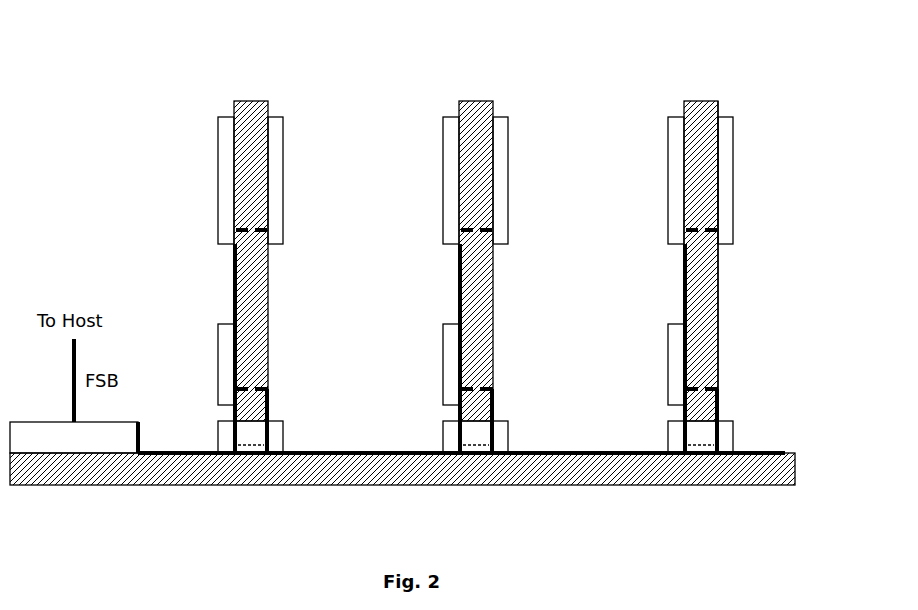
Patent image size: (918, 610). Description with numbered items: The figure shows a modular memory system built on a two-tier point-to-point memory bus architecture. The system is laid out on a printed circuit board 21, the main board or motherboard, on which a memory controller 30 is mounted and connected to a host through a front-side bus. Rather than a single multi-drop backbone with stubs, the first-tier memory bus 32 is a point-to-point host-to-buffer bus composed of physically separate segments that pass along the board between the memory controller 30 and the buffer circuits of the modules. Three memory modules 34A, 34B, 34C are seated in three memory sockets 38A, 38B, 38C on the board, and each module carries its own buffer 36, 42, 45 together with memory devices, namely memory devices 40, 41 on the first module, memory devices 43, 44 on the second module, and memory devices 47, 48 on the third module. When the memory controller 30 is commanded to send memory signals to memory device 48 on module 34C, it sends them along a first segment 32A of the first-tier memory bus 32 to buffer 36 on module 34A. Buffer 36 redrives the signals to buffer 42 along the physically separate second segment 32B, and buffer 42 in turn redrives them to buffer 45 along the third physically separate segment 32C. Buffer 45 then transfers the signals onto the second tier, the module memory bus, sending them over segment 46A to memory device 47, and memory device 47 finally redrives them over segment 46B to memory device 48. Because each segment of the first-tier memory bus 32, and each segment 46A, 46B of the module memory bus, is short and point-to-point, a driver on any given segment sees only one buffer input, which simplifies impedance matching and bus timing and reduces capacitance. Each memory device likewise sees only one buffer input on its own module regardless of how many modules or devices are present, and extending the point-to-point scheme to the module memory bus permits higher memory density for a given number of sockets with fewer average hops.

The printed circuit board 21 is at (372, 487).
The memory controller 30 is at (60, 437).
The first-tier memory bus 32 is at (572, 453).
The first segment of first-tier memory bus 32A is at (203, 453).
The second segment of first-tier memory bus 32B is at (428, 453).
The third segment of first-tier memory bus 32C is at (653, 453).
The memory module 34A is at (250, 101).
The memory module 34B is at (475, 101).
The memory module 34C is at (700, 101).
The buffer 36 is at (218, 340).
The buffer 42 is at (443, 340).
The buffer 45 is at (668, 340).
The memory socket 38A is at (284, 452).
The memory socket 38B is at (509, 452).
The memory socket 38C is at (734, 452).
The memory device 40 is at (218, 220).
The memory device 41 is at (283, 182).
The memory device 43 is at (443, 220).
The memory device 44 is at (508, 182).
The memory device 47 is at (668, 220).
The memory device 48 is at (733, 182).
The segment of module memory bus 46A is at (680, 270).
The segment of module memory bus 46B is at (692, 237).